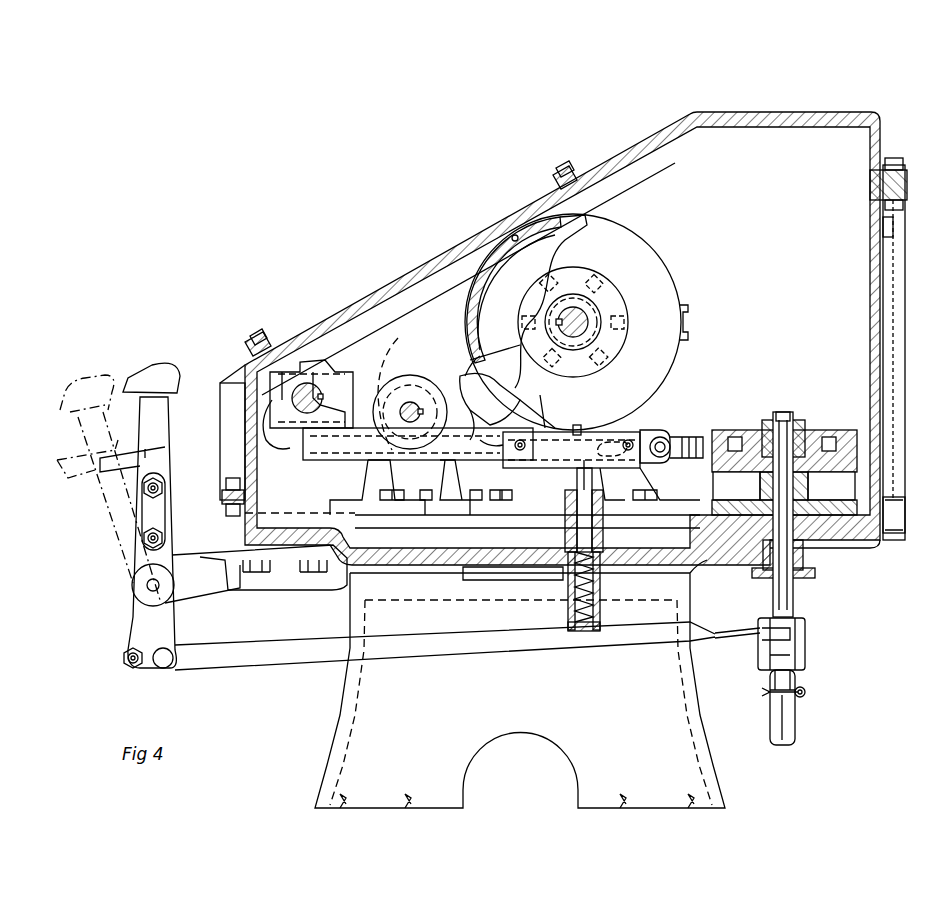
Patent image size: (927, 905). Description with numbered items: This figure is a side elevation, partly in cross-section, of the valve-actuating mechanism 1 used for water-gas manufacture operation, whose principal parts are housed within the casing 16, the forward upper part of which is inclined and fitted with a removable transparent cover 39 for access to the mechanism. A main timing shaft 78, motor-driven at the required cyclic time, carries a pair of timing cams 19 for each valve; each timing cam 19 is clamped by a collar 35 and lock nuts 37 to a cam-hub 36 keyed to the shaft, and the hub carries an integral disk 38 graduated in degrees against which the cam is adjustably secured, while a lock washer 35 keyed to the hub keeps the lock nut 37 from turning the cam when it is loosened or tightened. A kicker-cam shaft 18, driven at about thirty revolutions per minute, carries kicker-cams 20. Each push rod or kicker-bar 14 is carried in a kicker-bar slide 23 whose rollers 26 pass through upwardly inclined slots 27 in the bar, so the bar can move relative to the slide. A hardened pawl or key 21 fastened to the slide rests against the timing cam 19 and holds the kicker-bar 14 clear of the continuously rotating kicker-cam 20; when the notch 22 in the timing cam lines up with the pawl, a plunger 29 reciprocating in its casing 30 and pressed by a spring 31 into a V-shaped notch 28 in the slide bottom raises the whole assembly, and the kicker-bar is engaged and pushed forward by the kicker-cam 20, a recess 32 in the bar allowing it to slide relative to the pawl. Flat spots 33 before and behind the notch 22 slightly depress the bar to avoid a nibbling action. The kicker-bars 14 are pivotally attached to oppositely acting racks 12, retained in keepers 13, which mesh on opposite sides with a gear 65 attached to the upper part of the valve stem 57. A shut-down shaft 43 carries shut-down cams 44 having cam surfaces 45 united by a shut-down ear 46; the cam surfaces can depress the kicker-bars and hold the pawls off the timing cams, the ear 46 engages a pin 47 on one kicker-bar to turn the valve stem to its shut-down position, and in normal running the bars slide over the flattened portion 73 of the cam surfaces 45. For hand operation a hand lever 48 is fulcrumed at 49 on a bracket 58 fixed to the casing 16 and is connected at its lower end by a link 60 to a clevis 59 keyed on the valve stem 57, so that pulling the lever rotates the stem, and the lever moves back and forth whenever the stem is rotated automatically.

The machine 1 is at (224, 380).
The racks 12 is at (690, 440).
The keepers 13 is at (730, 440).
The kicker-bar 14 is at (470, 390).
The casing 16 is at (822, 114).
The driving power shaft 18 is at (325, 400).
The timing cam 19 is at (560, 216).
The kicker-cam 20 is at (335, 372).
The pawl 21 is at (584, 428).
The notch 22 is at (688, 320).
The kicker-bar slide 23 is at (545, 462).
The rollers 26 is at (520, 428).
The inclined slots 27 is at (500, 450).
The V-shaped notch 28 is at (590, 468).
The plunger 29 is at (590, 478).
The casing 30 is at (565, 536).
The spring 31 is at (600, 585).
The recess 32 is at (553, 428).
The flat spot 33 is at (690, 302).
The collar 35 is at (603, 290).
The cam-hub 36 is at (590, 312).
The lock nut 37 is at (600, 275).
The disk 38 is at (598, 215).
The transparent cover 39 is at (355, 285).
The shut-down shaft 43 is at (408, 395).
The shut-down cam 44 is at (425, 385).
The cam surface 45 is at (407, 385).
The shut-down ear 46 is at (465, 398).
The pin 47 is at (370, 462).
The hand lever 48 is at (135, 380).
The fulcrum 49 is at (150, 584).
The valve stem 57 is at (790, 595).
The bracket 58 is at (215, 582).
The clevis 59 is at (805, 634).
The link 60 is at (438, 652).
The gear 65 is at (805, 435).
The flattened portion 73 is at (418, 444).
The main timing shaft 78 is at (630, 312).